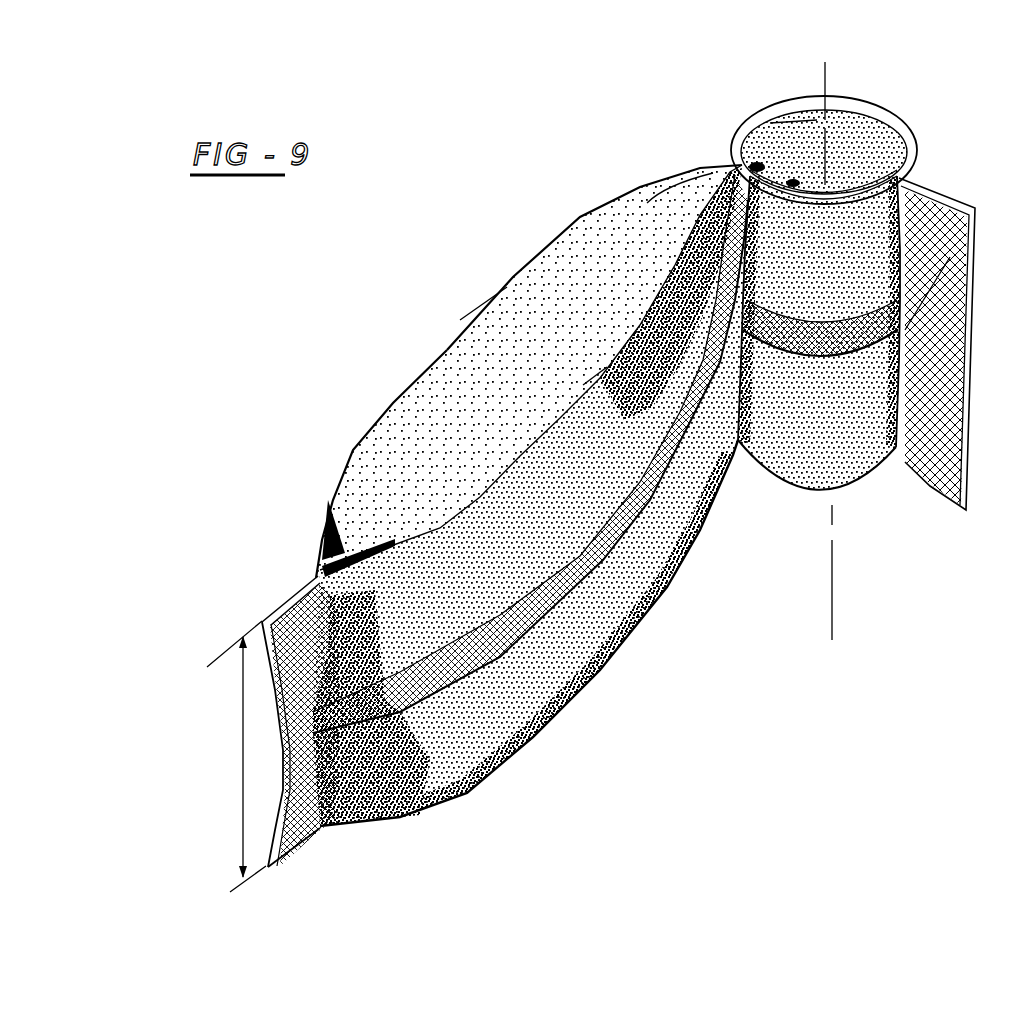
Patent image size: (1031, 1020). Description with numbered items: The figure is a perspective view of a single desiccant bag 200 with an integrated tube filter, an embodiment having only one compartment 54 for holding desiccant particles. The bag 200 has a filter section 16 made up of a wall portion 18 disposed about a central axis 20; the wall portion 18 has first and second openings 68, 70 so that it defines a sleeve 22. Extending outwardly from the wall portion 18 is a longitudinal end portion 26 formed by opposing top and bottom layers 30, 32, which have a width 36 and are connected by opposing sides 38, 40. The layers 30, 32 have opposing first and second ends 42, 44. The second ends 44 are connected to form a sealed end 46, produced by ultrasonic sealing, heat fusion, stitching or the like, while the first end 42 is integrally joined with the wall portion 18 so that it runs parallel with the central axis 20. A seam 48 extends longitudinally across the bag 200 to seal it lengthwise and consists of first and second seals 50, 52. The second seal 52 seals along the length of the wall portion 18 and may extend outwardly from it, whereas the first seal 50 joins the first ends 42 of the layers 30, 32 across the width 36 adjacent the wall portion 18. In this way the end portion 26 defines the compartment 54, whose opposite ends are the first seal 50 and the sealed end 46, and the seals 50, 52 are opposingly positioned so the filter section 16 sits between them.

The desiccant bag 200 is at (612, 162).
The filter section 16 is at (755, 112).
The wall portion 18 is at (853, 462).
The central axis 20 is at (835, 86).
The sleeve 22 is at (858, 147).
The longitudinal end portion 26 is at (500, 256).
The top layer 30 is at (363, 427).
The bottom layer 32 is at (637, 593).
The width 36 is at (241, 738).
The first side 38 is at (535, 737).
The second side 40 is at (447, 360).
The first end 42 is at (726, 162).
The second end 44 is at (290, 570).
The sealed end 46 is at (305, 828).
The seam 48 is at (407, 700).
The first seal 50 is at (727, 163).
The second seal 52 is at (930, 477).
The compartment 54 is at (578, 507).
The first opening 68 is at (795, 110).
The second opening 70 is at (803, 495).